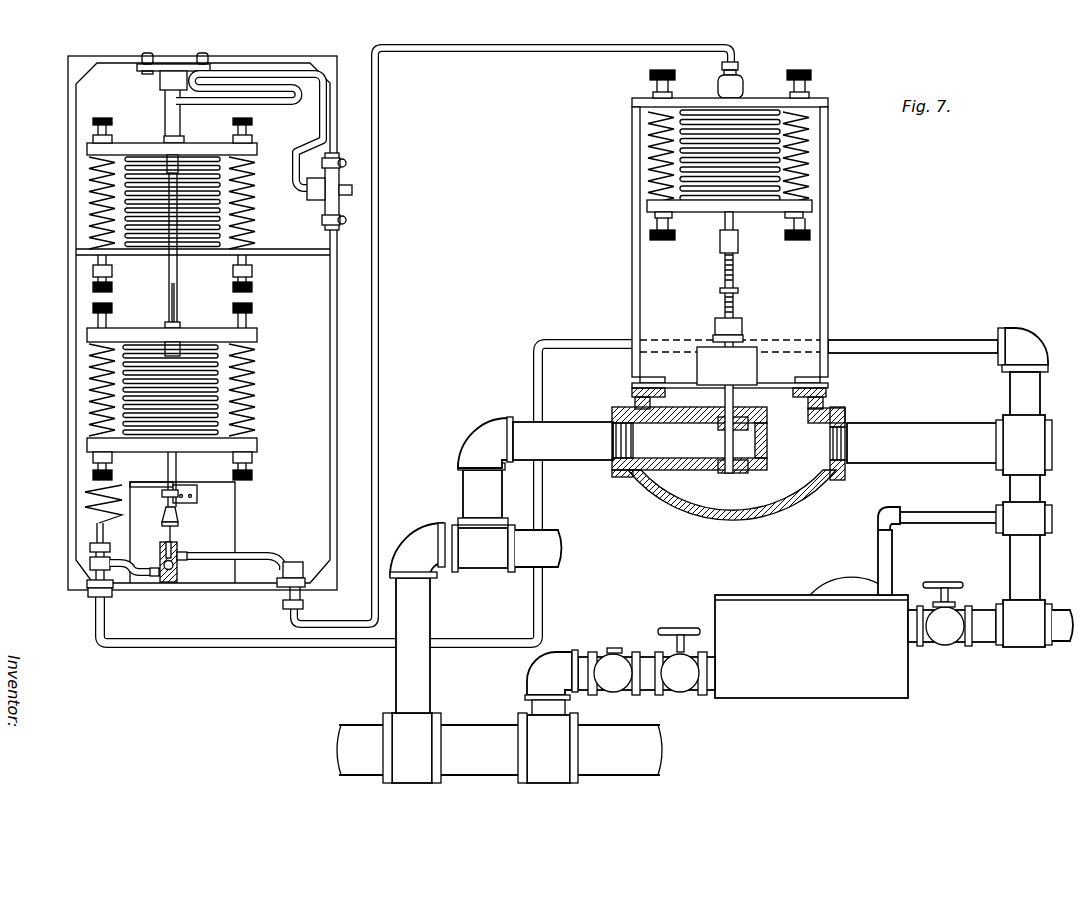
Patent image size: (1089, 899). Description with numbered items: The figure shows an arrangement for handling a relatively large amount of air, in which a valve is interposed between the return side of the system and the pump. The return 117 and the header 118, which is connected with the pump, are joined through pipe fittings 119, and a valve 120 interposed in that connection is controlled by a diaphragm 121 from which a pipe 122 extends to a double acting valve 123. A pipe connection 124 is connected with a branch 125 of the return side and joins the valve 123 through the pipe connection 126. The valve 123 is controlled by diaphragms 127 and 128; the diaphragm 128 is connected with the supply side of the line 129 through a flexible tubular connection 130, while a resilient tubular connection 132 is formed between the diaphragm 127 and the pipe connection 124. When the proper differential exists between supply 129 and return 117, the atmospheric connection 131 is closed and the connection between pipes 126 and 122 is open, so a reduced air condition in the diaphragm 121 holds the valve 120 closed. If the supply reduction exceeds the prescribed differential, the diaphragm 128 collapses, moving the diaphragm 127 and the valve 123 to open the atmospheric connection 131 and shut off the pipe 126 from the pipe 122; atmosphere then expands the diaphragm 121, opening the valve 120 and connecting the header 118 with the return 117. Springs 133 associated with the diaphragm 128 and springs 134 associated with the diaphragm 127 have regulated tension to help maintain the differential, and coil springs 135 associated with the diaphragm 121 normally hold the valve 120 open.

The return 117 is at (1065, 647).
The header 118 is at (481, 727).
The pipe fittings 119 is at (942, 455).
The valve 120 is at (720, 473).
The diaphragm 121 is at (755, 183).
The pipe 122 is at (570, 47).
The valve 123 is at (183, 552).
The pipe connection 124 is at (228, 643).
The branch 125 is at (1025, 388).
The pipe connection 126 is at (142, 570).
The diaphragm 127 is at (145, 342).
The diaphragm 128 is at (150, 234).
The supply side of the line 129 is at (353, 192).
The flexible tubular connection 130 is at (252, 77).
The atmospheric connection 131 is at (163, 542).
The resilient tubular connection 132 is at (85, 497).
The springs 133 is at (87, 212).
The springs 134 is at (88, 397).
The coil springs 135 is at (647, 157).